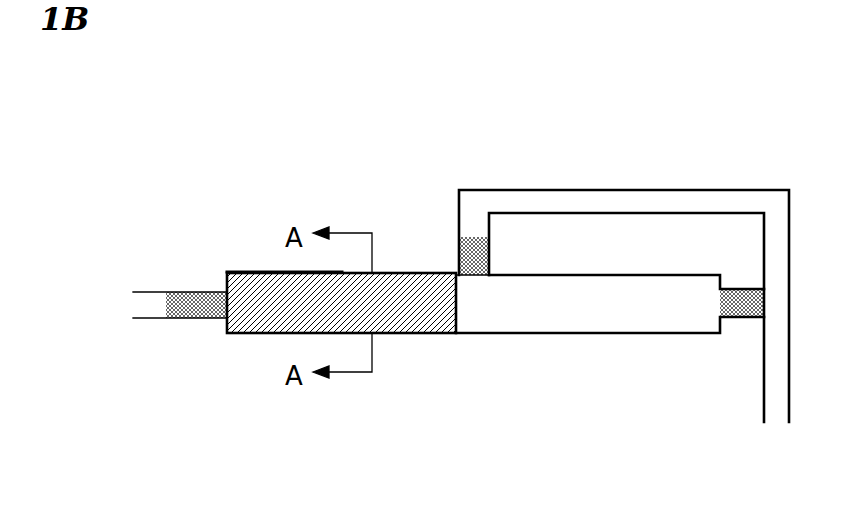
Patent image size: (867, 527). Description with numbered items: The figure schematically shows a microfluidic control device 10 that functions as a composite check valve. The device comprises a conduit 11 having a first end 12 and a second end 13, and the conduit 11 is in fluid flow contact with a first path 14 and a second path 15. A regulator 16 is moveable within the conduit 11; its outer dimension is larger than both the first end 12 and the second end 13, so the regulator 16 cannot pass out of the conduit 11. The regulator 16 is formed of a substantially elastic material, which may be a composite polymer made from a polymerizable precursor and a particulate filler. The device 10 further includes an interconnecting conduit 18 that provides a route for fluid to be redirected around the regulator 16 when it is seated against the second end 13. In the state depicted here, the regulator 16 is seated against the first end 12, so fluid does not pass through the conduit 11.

The microfluidic control device 10 is at (233, 113).
The conduit 11 is at (607, 330).
The first end 12 is at (193, 304).
The second end 13 is at (745, 318).
The first path 14 is at (13, 305).
The second path 15 is at (718, 70).
The regulator 16 is at (416, 322).
The interconnecting conduit 18 is at (502, 198).